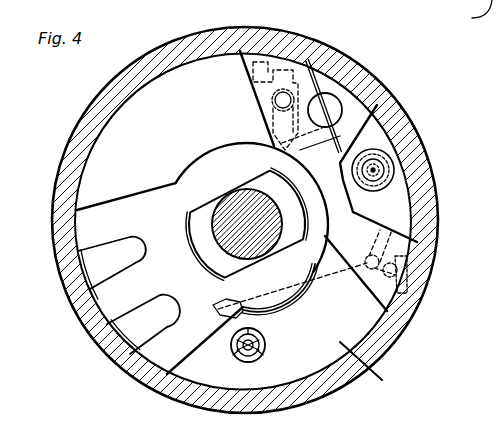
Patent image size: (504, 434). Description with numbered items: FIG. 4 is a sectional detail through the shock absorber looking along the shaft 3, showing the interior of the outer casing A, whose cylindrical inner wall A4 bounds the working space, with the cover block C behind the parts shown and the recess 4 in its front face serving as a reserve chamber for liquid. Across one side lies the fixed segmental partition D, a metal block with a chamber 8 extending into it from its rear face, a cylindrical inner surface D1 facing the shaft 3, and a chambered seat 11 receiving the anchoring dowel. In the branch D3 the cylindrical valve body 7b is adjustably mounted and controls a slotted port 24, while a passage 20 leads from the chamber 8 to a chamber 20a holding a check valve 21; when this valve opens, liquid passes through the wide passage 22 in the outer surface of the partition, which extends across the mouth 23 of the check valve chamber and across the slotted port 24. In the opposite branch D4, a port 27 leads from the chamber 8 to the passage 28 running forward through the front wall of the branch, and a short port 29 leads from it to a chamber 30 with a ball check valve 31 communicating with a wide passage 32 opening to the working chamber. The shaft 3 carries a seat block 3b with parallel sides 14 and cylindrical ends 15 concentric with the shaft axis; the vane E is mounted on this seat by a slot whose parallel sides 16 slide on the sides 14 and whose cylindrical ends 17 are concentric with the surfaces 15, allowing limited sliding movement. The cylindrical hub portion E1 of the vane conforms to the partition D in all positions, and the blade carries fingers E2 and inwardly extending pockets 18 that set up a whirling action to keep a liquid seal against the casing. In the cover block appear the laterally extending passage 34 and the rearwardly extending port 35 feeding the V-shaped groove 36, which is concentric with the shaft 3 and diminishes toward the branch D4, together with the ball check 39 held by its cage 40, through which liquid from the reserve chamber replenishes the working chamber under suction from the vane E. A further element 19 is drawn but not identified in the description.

The shaft 3 is at (232, 197).
The seat block 3b is at (257, 184).
The reserve chamber recess 4 is at (226, 237).
The cylindrical valve body 7b is at (330, 109).
The chamber 8 is at (402, 192).
The chambered seat 11 is at (210, 200).
The parallel sides 14 is at (261, 255).
The cylindrical ends 15 is at (203, 263).
The parallel sides 16 is at (235, 272).
The cylindrical ends 17 is at (188, 245).
The pockets 18 is at (129, 295).
The lever arm edges 19 is at (136, 198).
The passage 20 is at (348, 144).
The chamber 20a is at (274, 99).
The check valve 21 is at (274, 101).
The wide passage 22 is at (296, 54).
The mouth 23 is at (272, 54).
The slotted port 24 is at (318, 86).
The port 27 is at (390, 236).
The passage 28 is at (370, 257).
The short port 29 is at (356, 275).
The chamber 30 is at (405, 295).
The ball check valve 31 is at (410, 274).
The wide passage 32 is at (400, 310).
The laterally extending passage 34 is at (331, 283).
The rearwardly extending port 35 is at (235, 322).
The V-shaped groove 36 is at (289, 311).
The ball check 39 is at (250, 360).
The cage 40 is at (265, 344).
The outer casing A is at (107, 317).
The cylindrical inner wall A4 is at (98, 133).
The cover block C is at (368, 371).
The fixed segmental partition D is at (322, 183).
The cylindrical inner surface D1 is at (348, 200).
The branch D3 is at (340, 93).
The opposite branch D4 is at (400, 247).
The vane E is at (239, 213).
The cylindrical hub portion E1 is at (194, 170).
The fingers E2 is at (111, 257).